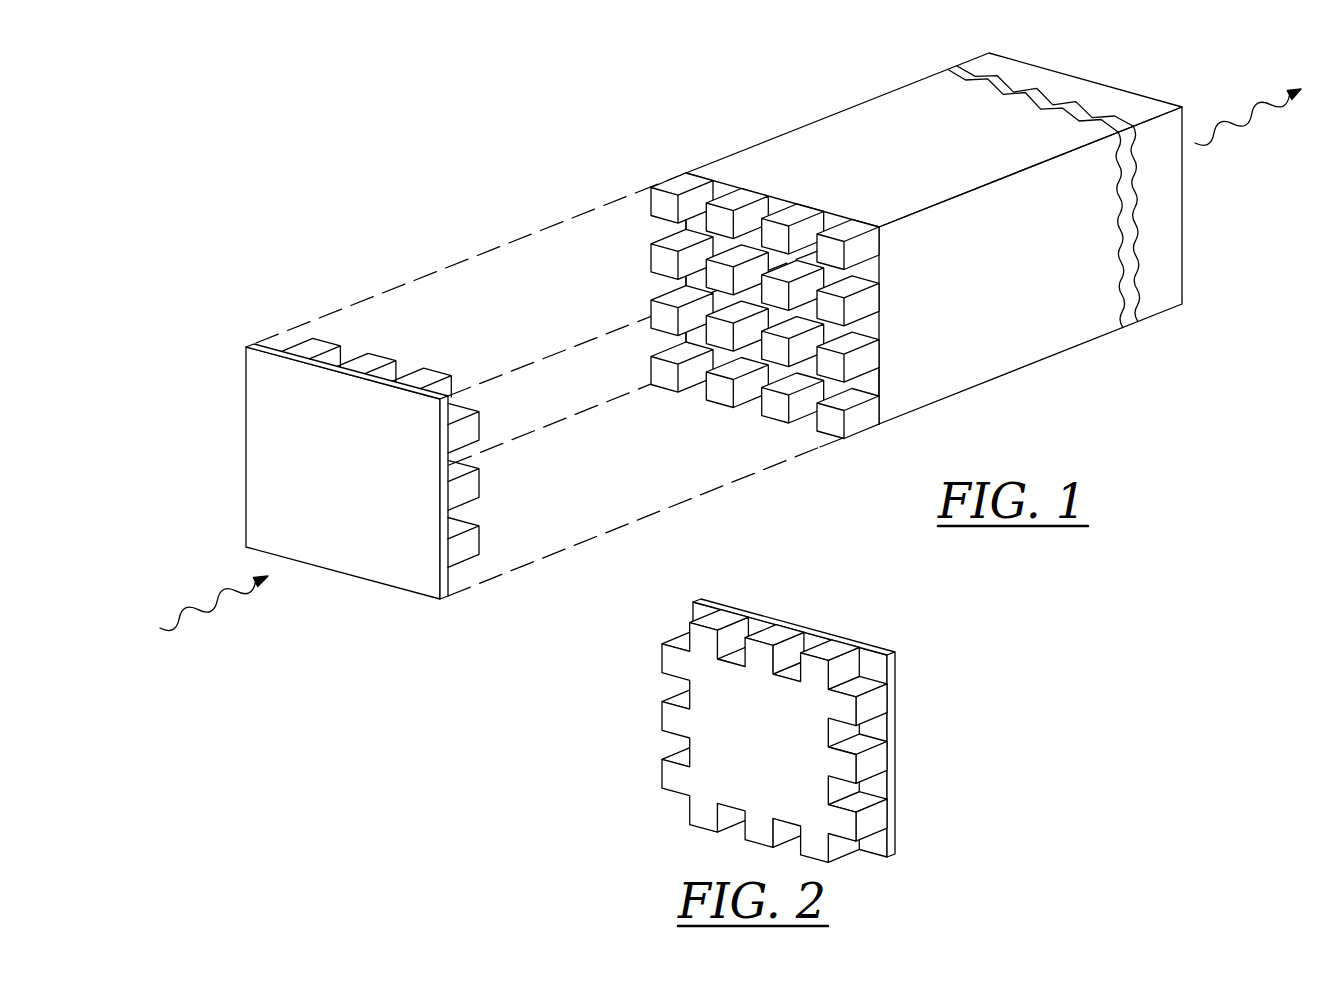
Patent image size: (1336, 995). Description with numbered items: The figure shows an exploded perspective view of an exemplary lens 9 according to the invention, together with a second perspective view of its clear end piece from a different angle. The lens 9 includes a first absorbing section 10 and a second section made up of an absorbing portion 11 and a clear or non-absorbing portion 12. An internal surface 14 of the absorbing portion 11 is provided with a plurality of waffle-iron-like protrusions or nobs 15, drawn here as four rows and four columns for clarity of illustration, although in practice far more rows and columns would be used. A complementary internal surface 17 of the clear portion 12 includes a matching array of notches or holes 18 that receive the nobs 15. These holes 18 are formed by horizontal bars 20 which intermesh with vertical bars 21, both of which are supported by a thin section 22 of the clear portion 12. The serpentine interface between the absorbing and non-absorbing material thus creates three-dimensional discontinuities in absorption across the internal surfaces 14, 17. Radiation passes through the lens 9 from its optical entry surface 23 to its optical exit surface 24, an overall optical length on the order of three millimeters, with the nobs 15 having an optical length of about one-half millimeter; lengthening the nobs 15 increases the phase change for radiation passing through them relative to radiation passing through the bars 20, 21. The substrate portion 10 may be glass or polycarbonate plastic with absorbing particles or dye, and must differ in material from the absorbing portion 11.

In FIG. 1, the lens 9 is at (987, 407).
In FIG. 1, the first absorbing section 10 is at (1028, 368).
In FIG. 1, the absorbing portion 11 is at (855, 428).
In FIG. 1, the clear or non-absorbing portion 12 is at (353, 568).
In FIG. 2, the clear or non-absorbing portion 12 is at (893, 703).
In FIG. 1, the internal surface 14 is at (847, 372).
In FIG. 1, the protrusions or nobs 15 is at (662, 310).
In FIG. 2, the complementary internal surface 17 is at (855, 772).
In FIG. 2, the notches or holes 18 is at (776, 695).
In FIG. 2, the horizontal bars 20 is at (673, 726).
In FIG. 2, the vertical bars 21 is at (695, 647).
In FIG. 1, the thin section 22 is at (447, 458).
In FIG. 2, the thin section 22 is at (893, 734).
In FIG. 1, the optical entry surface 23 is at (260, 370).
In FIG. 1, the optical exit surface 24 is at (1023, 58).